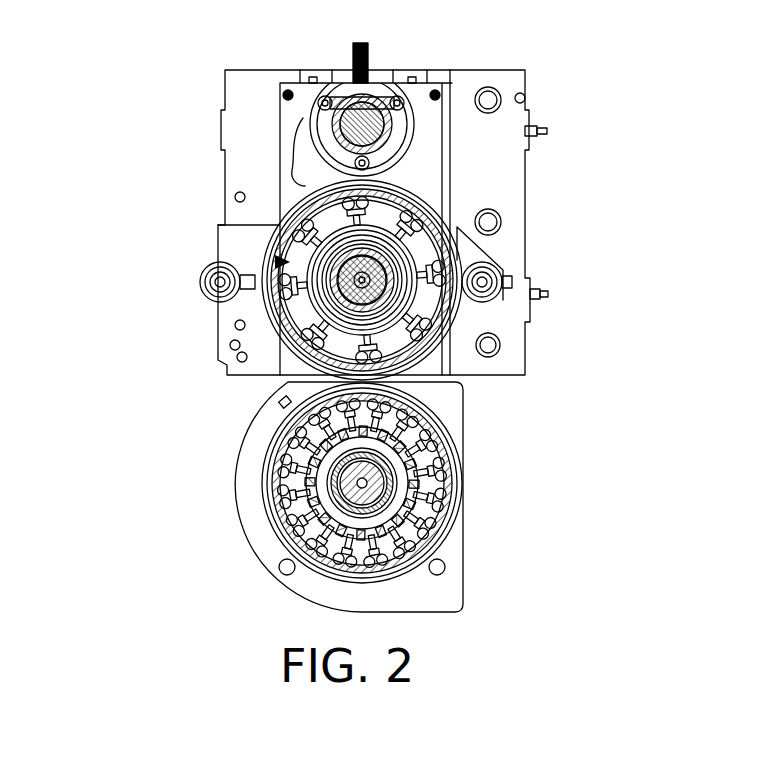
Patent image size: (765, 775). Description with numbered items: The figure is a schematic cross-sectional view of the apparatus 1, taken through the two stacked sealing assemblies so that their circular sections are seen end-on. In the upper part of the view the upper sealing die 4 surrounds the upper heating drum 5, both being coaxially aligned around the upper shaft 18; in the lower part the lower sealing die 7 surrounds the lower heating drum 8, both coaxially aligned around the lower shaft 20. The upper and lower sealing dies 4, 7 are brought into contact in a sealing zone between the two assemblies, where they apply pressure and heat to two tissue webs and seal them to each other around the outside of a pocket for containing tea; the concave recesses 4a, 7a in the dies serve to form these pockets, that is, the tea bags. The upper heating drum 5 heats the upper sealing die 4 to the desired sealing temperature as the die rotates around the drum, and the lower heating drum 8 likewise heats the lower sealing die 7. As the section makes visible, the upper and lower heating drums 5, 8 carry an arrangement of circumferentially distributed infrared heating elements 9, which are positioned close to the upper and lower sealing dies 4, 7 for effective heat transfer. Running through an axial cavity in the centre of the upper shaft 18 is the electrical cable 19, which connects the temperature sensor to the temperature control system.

The apparatus 1 is at (138, 68).
The upper sealing die 4 is at (440, 206).
The concave recess 4a is at (458, 242).
The upper heating drum 5 is at (270, 263).
The lower sealing die 7 is at (460, 479).
The concave recess 7a is at (457, 445).
The lower heating drum 8 is at (282, 550).
The infrared heating elements 9 is at (272, 484).
The upper shaft 18 is at (400, 300).
The electrical cable 19 is at (380, 280).
The lower shaft 20 is at (455, 510).